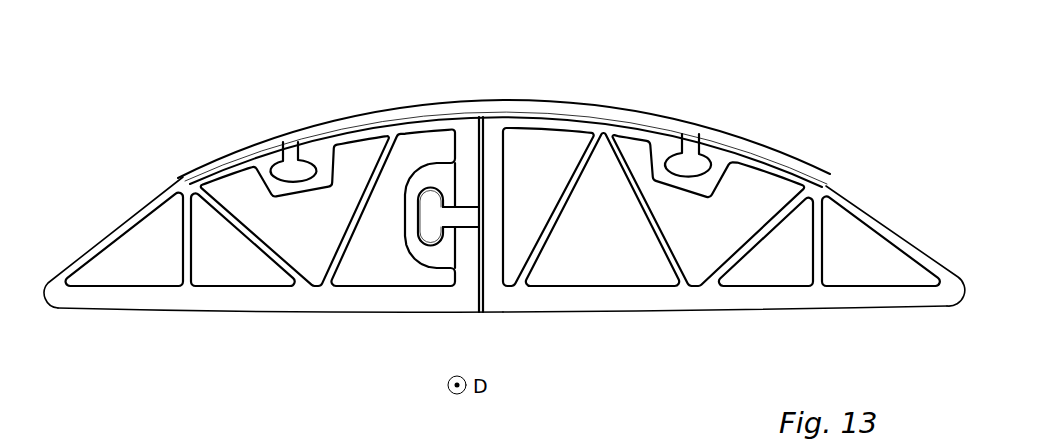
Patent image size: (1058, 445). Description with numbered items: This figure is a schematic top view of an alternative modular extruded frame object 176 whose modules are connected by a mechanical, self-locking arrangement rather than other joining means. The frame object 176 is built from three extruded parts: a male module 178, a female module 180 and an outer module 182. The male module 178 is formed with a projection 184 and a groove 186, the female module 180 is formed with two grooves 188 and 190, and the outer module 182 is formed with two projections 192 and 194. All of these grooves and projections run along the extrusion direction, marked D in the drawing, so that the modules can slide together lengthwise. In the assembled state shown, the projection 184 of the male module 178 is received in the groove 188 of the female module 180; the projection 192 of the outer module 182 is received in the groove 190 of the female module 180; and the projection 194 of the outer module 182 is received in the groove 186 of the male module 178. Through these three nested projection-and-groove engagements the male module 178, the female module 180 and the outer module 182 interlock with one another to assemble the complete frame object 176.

The modular extruded frame object 176 is at (834, 143).
The male module 178 is at (600, 297).
The female module 180 is at (360, 297).
The outer module 182 is at (597, 107).
The projection 184 is at (478, 216).
The groove 186 is at (710, 198).
The groove 188 is at (430, 187).
The groove 190 is at (283, 182).
The projection 192 is at (292, 158).
The projection 194 is at (690, 152).